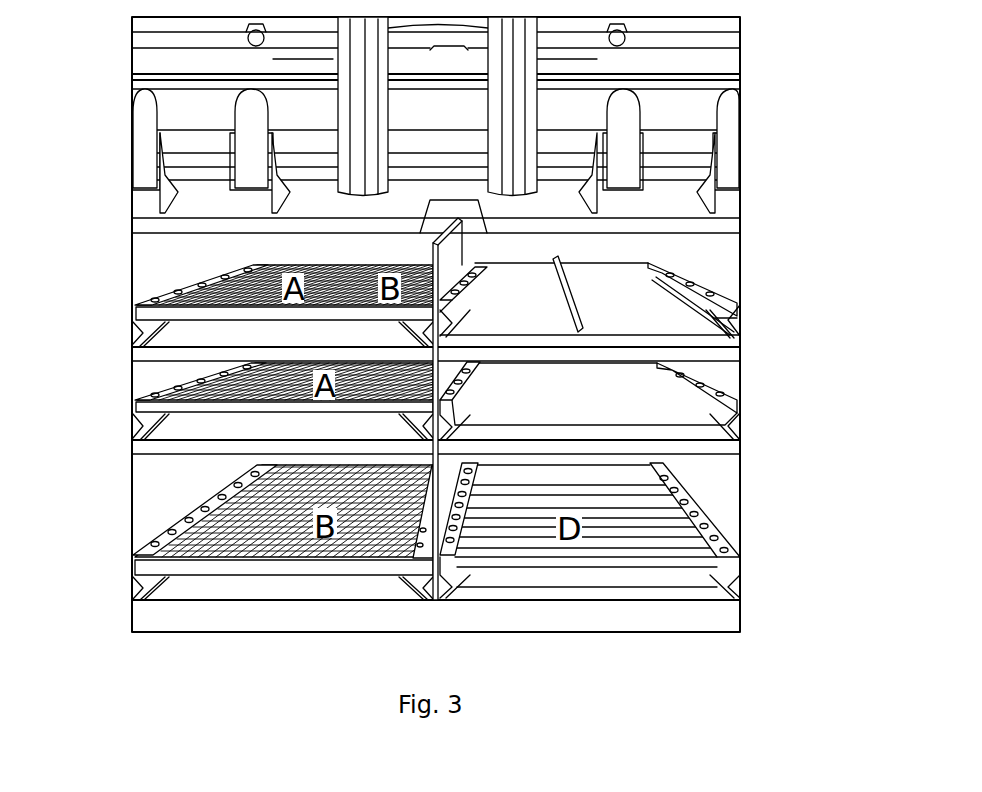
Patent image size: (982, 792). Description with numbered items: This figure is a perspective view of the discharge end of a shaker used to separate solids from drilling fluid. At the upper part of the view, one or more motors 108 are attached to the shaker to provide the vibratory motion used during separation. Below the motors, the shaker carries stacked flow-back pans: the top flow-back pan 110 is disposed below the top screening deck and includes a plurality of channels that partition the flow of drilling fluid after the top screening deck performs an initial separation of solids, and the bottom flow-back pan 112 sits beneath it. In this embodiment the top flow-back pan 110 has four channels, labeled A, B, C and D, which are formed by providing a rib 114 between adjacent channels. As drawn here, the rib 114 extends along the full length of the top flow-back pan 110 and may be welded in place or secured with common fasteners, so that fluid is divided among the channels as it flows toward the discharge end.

The motor 108 is at (183, 115).
The top flow-back pan 110 is at (617, 310).
The bottom flow-back pan 112 is at (653, 413).
The rib 114 is at (473, 279).